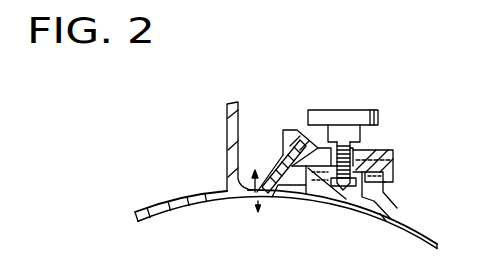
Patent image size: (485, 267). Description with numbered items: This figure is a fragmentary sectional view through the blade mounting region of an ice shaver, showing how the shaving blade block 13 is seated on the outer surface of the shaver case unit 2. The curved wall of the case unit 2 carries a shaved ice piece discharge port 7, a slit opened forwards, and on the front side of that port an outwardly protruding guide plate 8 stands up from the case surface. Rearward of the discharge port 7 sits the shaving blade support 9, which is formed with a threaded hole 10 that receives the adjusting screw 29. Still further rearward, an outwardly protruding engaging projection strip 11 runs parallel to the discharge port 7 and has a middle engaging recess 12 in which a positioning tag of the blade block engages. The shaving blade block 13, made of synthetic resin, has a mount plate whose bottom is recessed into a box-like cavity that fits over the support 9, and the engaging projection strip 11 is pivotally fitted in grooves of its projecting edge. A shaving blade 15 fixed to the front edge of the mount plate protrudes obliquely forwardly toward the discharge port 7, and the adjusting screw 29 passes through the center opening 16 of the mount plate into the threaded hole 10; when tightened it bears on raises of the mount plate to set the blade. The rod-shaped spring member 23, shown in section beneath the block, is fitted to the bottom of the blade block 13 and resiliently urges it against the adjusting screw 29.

The shaver case unit 2 is at (152, 198).
The shaved ice piece discharge port 7 is at (253, 200).
The guide plate 8 is at (230, 122).
The shaving blade support 9 is at (372, 168).
The threaded hole 10 is at (345, 192).
The engaging projection strip 11 is at (381, 195).
The engaging recess 12 is at (374, 181).
The shaving blade block 13 is at (288, 124).
The shaving blade 15 is at (276, 196).
The center opening 16 is at (352, 152).
The spring member 23 is at (322, 176).
The adjusting screw 29 is at (345, 111).